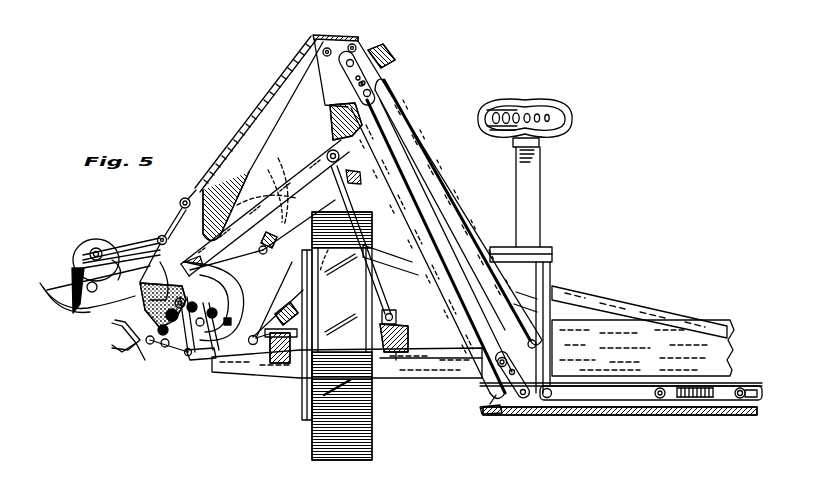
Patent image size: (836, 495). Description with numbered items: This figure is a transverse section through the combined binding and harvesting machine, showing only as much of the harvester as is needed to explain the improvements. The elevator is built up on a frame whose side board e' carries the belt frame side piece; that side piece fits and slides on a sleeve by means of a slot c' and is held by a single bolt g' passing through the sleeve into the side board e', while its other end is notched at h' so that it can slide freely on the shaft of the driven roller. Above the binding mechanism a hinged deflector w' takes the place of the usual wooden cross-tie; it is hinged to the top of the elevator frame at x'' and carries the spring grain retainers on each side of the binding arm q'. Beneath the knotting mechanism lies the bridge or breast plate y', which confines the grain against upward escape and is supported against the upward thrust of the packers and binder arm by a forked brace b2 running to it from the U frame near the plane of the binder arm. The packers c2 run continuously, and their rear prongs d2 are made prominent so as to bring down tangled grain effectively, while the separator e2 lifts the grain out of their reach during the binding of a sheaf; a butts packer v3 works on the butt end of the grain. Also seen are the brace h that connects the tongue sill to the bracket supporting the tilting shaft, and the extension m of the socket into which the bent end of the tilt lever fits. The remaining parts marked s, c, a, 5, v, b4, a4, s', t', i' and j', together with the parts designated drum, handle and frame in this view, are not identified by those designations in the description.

The hinge x'' is at (335, 60).
The hinged deflector w' is at (240, 137).
The butts packer v3 is at (263, 141).
The rear prongs of the packers d2 is at (256, 208).
The separator e2 is at (265, 208).
The notch h' is at (374, 131).
The slotted lever s is at (360, 61).
The lever block c is at (388, 44).
The bolt g' is at (386, 70).
The inclined beam a is at (431, 257).
The side board e' is at (450, 194).
The link 5 is at (540, 445).
The slot c' is at (504, 422).
The strut bracket v is at (369, 263).
The element drum is at (337, 336).
The handle and post handle is at (525, 246).
The brace h is at (634, 297).
The element frame is at (487, 367).
The forked brace b2 is at (112, 252).
The pivot b4 is at (161, 236).
The breast plate y' is at (95, 290).
The claw a4 is at (148, 290).
The extension of socket m is at (182, 309).
The packers c2 is at (217, 301).
The binding arm q' is at (199, 331).
The pin s' is at (205, 326).
The claw lever t' is at (150, 345).
The link i' is at (276, 326).
The rod j' is at (275, 294).